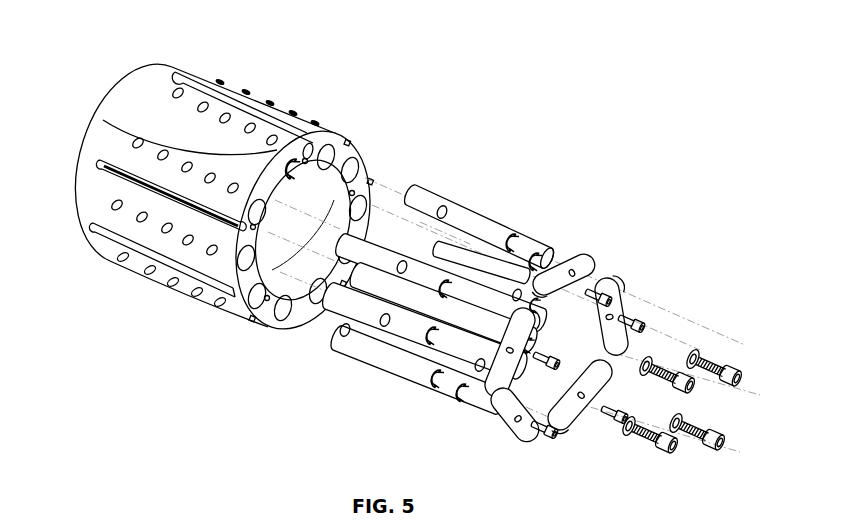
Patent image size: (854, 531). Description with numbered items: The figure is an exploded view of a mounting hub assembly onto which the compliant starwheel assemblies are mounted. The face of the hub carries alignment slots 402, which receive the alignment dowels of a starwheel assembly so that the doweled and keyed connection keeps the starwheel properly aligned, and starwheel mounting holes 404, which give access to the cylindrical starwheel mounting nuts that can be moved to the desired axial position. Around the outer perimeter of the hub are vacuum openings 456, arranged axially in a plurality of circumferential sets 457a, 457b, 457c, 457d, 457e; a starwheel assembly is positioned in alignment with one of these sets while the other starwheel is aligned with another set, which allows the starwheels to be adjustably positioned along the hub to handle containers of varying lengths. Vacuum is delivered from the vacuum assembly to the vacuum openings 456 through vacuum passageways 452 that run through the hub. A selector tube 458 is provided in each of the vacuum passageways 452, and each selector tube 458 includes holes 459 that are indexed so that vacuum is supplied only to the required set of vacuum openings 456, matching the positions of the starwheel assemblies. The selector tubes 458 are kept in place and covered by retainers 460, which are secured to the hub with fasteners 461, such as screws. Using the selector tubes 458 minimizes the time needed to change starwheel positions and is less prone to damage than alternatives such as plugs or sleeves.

The alignment slots 402 is at (350, 141).
The starwheel mounting holes 404 is at (103, 120).
The vacuum passageways 452 is at (232, 216).
The vacuum openings 456 is at (178, 89).
The circumferential set of vacuum openings 457a is at (324, 117).
The circumferential set of vacuum openings 457b is at (301, 102).
The circumferential set of vacuum openings 457c is at (278, 90).
The circumferential set of vacuum openings 457d is at (254, 81).
The circumferential set of vacuum openings 457e is at (229, 67).
The selector tube 458 is at (281, 167).
The holes 459 is at (446, 210).
The retainers 460 is at (600, 275).
The fasteners 461 is at (733, 371).